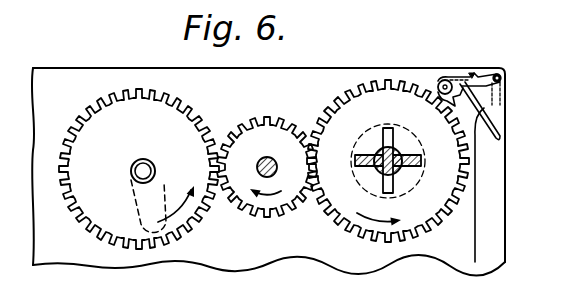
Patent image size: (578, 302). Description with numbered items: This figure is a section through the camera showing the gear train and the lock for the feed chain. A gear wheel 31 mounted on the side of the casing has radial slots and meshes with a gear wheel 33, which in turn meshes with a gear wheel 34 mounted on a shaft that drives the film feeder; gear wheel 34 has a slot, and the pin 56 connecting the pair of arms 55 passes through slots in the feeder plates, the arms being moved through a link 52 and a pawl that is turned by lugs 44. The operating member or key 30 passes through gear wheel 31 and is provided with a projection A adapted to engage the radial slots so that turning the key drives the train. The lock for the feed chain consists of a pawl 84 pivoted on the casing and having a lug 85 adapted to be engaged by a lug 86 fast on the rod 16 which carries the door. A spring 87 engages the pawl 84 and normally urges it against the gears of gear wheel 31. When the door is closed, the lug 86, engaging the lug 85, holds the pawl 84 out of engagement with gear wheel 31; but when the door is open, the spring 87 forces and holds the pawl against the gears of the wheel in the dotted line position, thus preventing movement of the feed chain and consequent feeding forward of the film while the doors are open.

The rod 16 is at (497, 76).
The operating member or key 30 is at (376, 150).
The gear wheel 31 is at (386, 245).
The gear wheel 33 is at (276, 216).
The gear wheel 34 is at (126, 250).
The lugs 44 is at (525, 185).
The link 52 is at (356, 161).
The arms 55 is at (150, 166).
The pin 56 is at (134, 206).
The pawl 84 is at (452, 82).
The lug 85 is at (472, 72).
The lug 86 is at (487, 72).
The spring 87 is at (486, 113).
The projection A is at (408, 157).